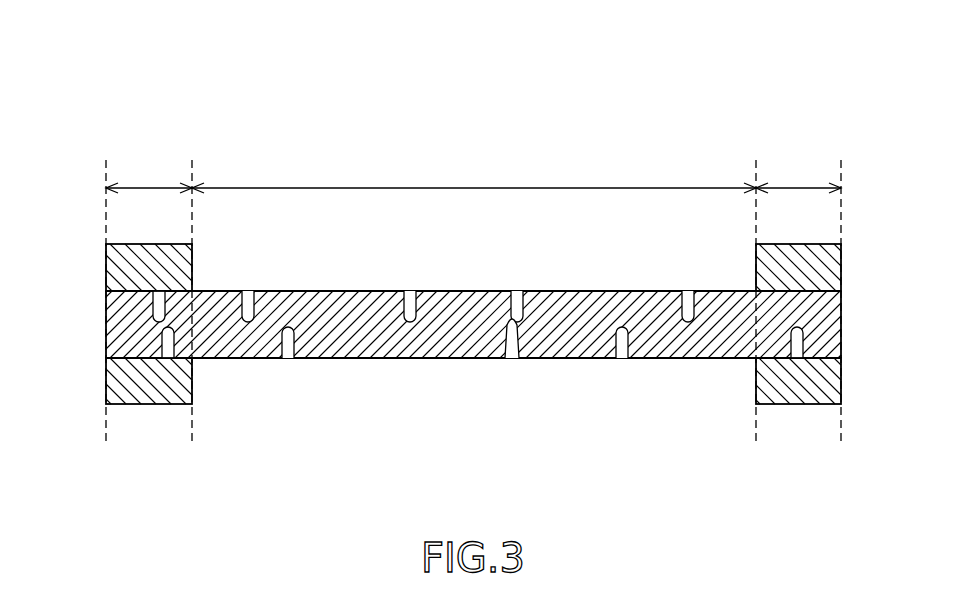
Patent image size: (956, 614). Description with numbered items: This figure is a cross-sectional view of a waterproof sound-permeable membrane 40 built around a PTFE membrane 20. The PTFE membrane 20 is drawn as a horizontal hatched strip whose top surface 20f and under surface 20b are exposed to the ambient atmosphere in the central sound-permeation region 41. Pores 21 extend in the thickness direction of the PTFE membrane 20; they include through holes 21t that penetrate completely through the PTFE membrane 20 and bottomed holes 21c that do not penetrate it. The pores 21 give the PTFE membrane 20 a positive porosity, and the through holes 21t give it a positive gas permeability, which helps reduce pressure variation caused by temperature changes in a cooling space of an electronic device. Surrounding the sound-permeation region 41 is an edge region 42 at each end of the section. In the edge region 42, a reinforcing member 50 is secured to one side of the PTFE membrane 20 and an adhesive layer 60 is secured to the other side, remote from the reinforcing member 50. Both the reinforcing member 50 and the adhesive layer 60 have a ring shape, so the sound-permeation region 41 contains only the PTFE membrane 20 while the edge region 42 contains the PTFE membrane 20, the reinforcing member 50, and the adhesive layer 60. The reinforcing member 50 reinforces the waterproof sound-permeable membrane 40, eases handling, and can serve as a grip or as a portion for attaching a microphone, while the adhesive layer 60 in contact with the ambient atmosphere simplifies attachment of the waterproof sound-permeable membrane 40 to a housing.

The waterproof sound-permeable membrane 40 is at (434, 249).
The sound-permeation region 41 is at (480, 187).
The edge region 42 is at (150, 187).
The PTFE membrane 20 is at (473, 352).
The top surface 20f is at (296, 290).
The under surface 20b is at (259, 359).
The pores 21 is at (576, 409).
The through holes 21t is at (508, 359).
The bottomed holes 21c is at (629, 390).
The reinforcing member 50 is at (130, 261).
The adhesive layer 60 is at (127, 389).